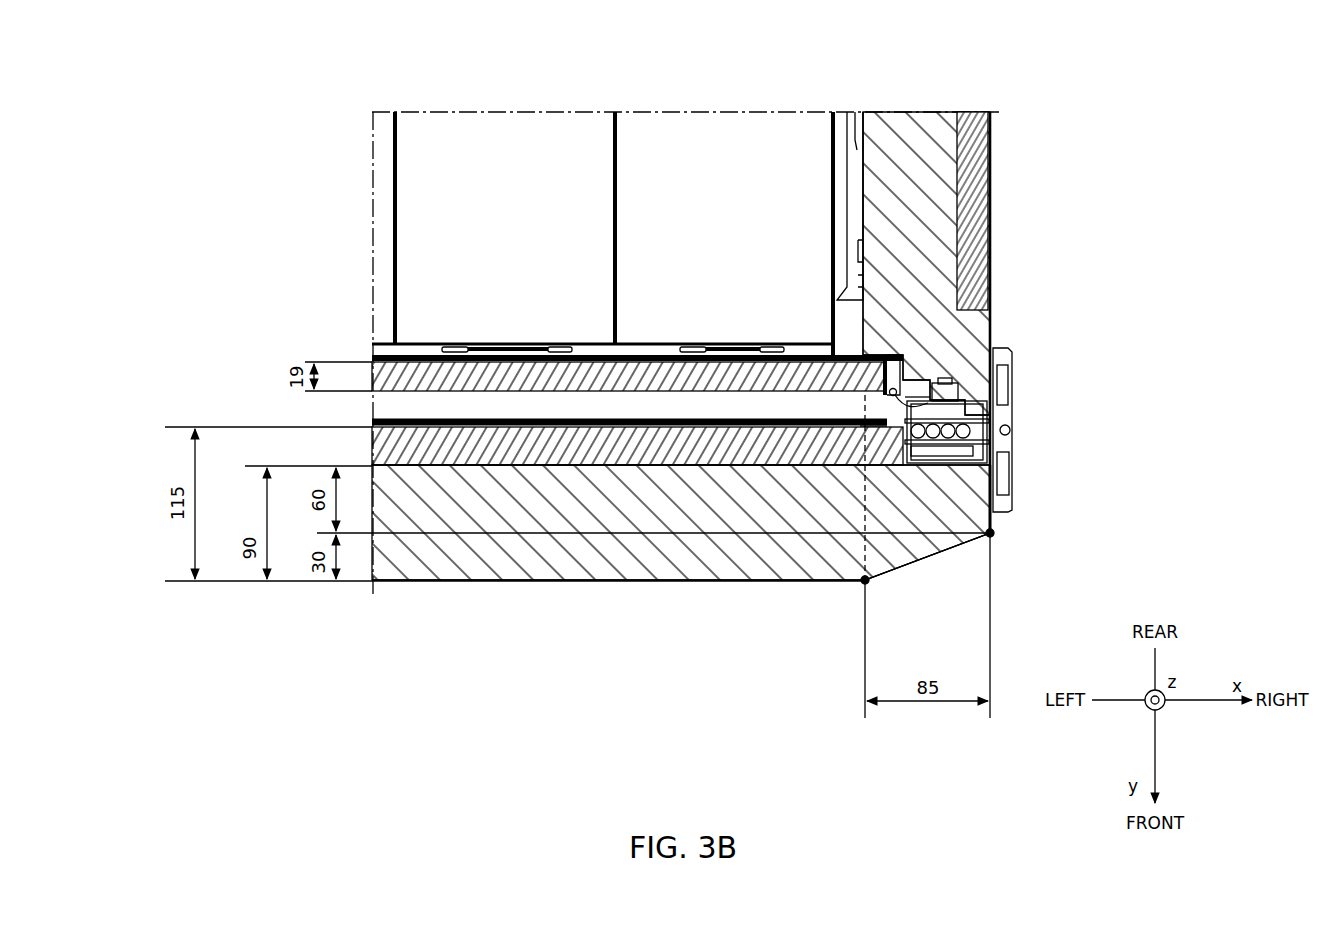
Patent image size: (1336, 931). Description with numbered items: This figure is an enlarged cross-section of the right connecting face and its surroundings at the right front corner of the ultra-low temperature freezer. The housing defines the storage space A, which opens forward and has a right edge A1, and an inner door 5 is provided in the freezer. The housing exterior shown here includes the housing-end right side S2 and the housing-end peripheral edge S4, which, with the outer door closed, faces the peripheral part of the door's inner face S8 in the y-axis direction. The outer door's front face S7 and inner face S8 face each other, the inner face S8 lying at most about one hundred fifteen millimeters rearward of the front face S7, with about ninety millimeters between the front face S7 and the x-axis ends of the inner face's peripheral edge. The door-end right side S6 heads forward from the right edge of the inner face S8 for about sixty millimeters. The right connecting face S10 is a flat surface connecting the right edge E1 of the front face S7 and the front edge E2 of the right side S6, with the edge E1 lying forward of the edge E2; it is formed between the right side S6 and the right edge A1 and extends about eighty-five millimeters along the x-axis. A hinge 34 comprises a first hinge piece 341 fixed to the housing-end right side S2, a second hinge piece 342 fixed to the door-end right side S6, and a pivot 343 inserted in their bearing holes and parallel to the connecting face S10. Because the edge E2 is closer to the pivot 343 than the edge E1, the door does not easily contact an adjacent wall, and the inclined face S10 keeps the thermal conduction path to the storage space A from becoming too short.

The storage space A is at (500, 148).
The right edge of storage space A1 is at (855, 146).
The inner door 5 is at (585, 355).
The inner face S8 is at (428, 418).
The housing-end peripheral edge S4 is at (945, 385).
The housing-end right side S2 is at (1000, 234).
The hinge 34 is at (1071, 430).
The first hinge piece 341 is at (1013, 385).
The second hinge piece 342 is at (1047, 473).
The pivot 343 is at (1011, 430).
The door-end right side S6 is at (995, 525).
The front edge of right side E2 is at (993, 536).
The right connecting face S10 is at (923, 558).
The right edge of outer face E1 is at (864, 583).
The front face S7 is at (800, 584).